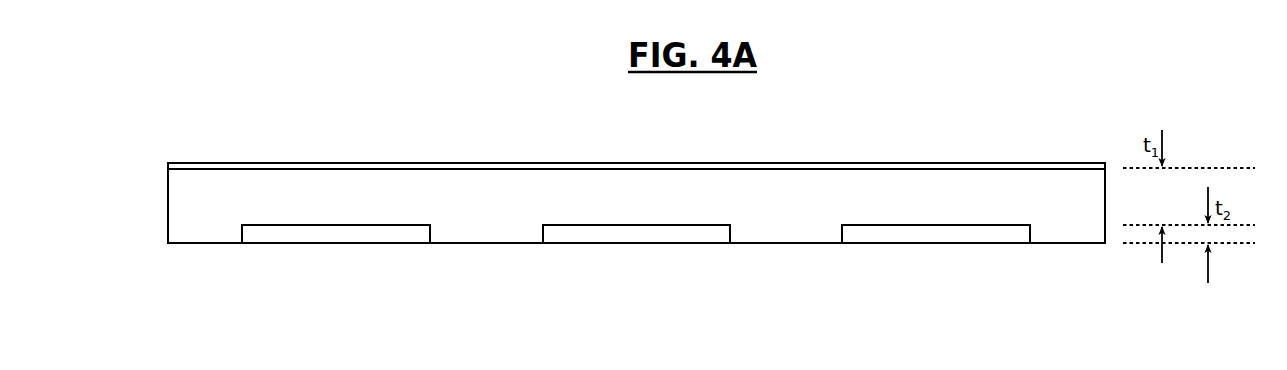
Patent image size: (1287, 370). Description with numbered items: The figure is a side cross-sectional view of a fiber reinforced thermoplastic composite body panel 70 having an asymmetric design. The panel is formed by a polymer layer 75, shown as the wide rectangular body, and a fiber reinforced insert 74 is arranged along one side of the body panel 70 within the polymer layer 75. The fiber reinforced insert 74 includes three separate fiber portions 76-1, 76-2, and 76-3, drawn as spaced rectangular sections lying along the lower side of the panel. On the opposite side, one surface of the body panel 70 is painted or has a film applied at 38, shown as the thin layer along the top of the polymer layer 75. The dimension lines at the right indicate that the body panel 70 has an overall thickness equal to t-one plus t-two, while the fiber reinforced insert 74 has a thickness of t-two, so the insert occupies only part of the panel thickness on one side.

The paint or film 38 is at (320, 162).
The fiber reinforced thermoplastic composite body panel 70 is at (466, 126).
The polymer layer 75 is at (769, 188).
The fiber reinforced insert 74 is at (222, 227).
The fiber portion 76-1 is at (405, 244).
The fiber portion 76-2 is at (673, 244).
The fiber portion 76-3 is at (960, 244).